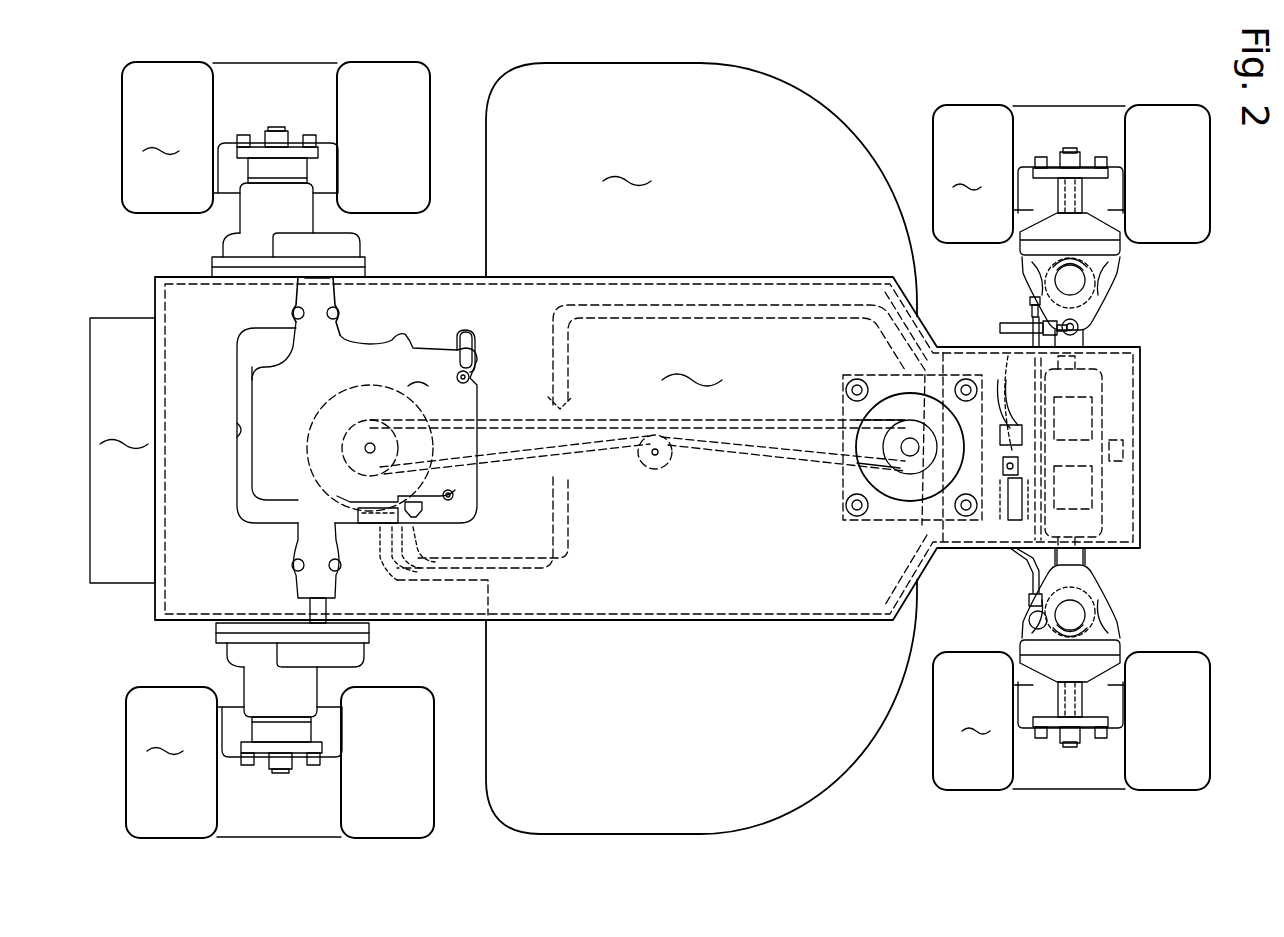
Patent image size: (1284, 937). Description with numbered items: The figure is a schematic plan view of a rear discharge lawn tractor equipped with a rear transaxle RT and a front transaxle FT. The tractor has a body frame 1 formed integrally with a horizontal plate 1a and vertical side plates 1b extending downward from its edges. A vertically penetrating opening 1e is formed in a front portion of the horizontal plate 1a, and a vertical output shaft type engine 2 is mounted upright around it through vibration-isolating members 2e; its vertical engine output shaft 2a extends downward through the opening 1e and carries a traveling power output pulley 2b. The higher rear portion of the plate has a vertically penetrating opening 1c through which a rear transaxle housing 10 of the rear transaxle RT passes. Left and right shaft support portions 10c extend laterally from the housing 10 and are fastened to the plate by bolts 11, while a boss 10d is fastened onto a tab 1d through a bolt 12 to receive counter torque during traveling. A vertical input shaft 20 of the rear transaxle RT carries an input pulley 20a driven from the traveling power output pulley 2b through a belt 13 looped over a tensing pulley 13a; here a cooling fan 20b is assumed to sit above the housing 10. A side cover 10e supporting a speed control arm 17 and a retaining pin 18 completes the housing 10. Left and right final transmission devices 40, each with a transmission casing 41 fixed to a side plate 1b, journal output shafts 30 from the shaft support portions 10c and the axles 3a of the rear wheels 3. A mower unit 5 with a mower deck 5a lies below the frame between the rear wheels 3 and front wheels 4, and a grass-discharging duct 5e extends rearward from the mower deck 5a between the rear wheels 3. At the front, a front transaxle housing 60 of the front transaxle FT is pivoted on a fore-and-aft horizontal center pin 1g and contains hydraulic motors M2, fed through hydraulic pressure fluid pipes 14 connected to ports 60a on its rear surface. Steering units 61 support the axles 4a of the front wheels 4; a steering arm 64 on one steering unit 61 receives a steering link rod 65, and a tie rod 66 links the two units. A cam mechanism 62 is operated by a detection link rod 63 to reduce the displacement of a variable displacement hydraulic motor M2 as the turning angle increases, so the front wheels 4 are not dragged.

The body frame 1 is at (583, 647).
The horizontal plate 1a is at (736, 415).
The vertical side plates 1b is at (687, 285).
The vertically penetrating opening 1c is at (237, 428).
The tab 1d is at (472, 348).
The vertically penetrating opening 1e is at (900, 400).
The fore-and-aft horizontal center pin 1g is at (1123, 448).
The vertical output shaft type engine 2 is at (843, 470).
The vertical engine output shaft 2a is at (913, 456).
The traveling power output pulley 2b is at (900, 463).
The vibration-isolating members 2e is at (847, 387).
The rear wheels 3 is at (278, 450).
The axle 3a is at (272, 157).
The front wheels 4 is at (1071, 447).
The axles 4a is at (1062, 197).
The mower unit 5 is at (877, 86).
The mower deck 5a is at (627, 167).
The grass-discharging duct 5e is at (122, 450).
The rear transaxle housing 10 is at (357, 422).
The shaft support portions 10c is at (300, 310).
The boss 10d is at (462, 352).
The side cover 10e is at (425, 512).
The bolts 11 is at (298, 313).
The bolt 12 is at (472, 377).
The belt 13 is at (468, 463).
The pulley 13a is at (666, 466).
The hydraulic pressure fluid pipes 14 is at (510, 560).
The speed control arm 17 is at (388, 563).
The retaining pin 18 is at (414, 523).
The vertical input shaft 20 is at (368, 445).
The input pulley 20a is at (340, 450).
The cooling fan 20b is at (311, 430).
The output shaft 30 is at (312, 608).
The final transmission devices 40 is at (387, 248).
The transmission casing 41 is at (223, 257).
The front transaxle housing 60 is at (1110, 387).
The ports 60a is at (1020, 403).
The steering units 61 is at (1118, 247).
The cam mechanism 62 is at (995, 522).
The detection link rod 63 is at (1020, 560).
The steering arm 64 is at (1094, 300).
The steering link rod 65 is at (1013, 322).
The tie rod 66 is at (1045, 564).
The hydraulic motors M2 is at (1080, 410).
The rear transaxle RT is at (249, 512).
The front transaxle FT is at (1120, 515).